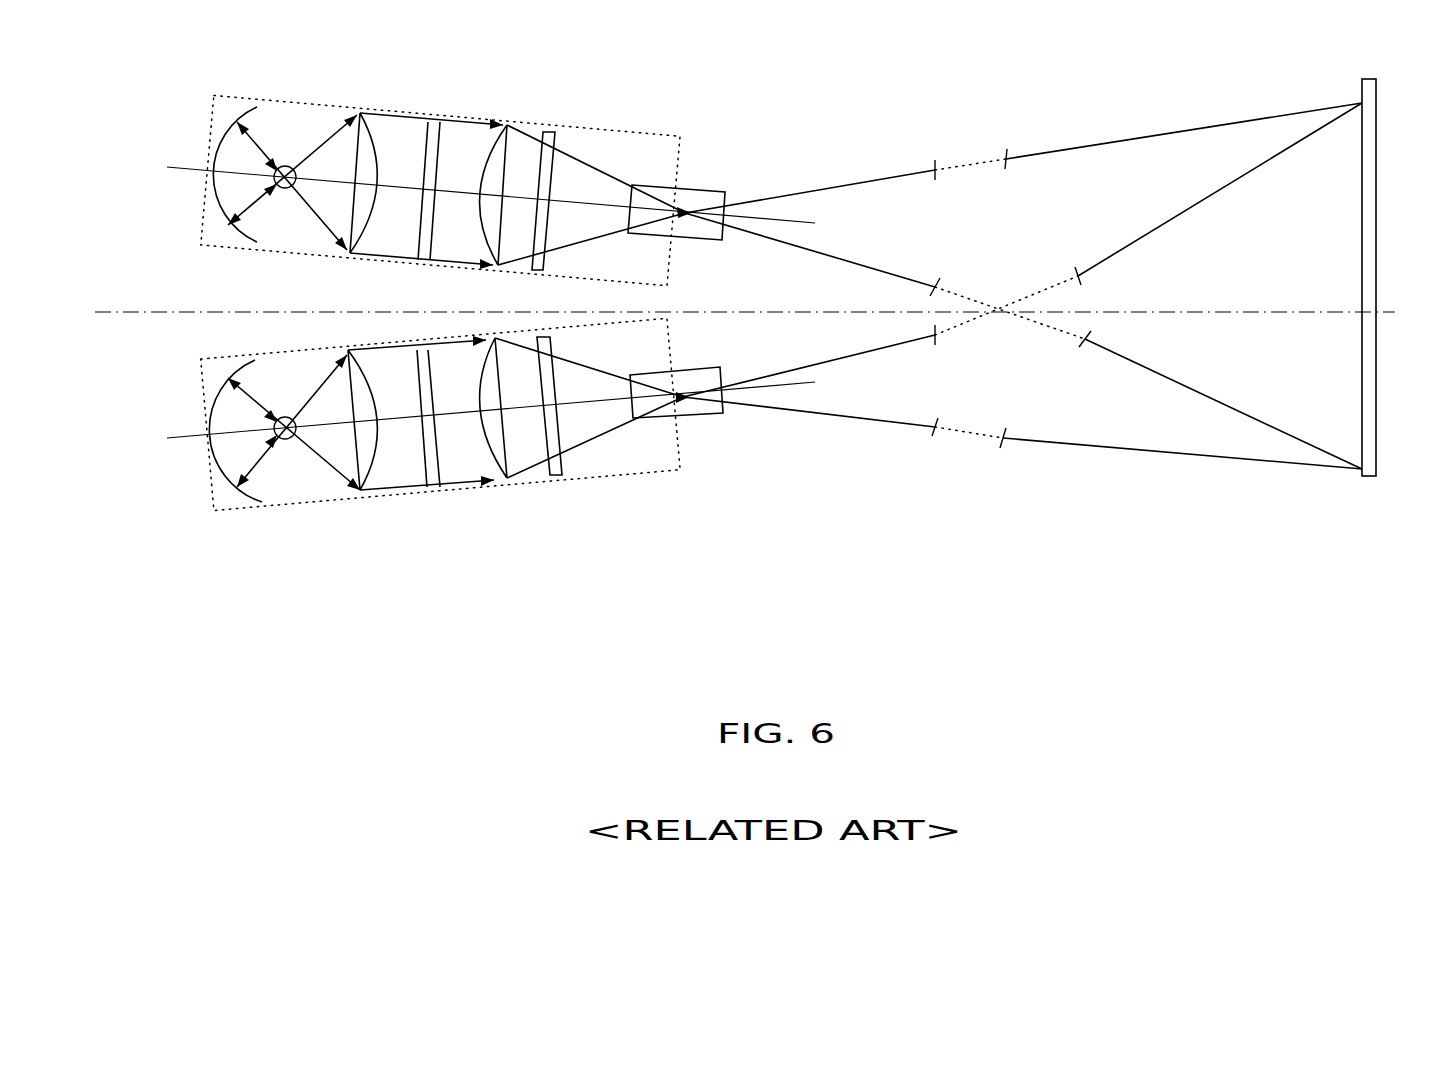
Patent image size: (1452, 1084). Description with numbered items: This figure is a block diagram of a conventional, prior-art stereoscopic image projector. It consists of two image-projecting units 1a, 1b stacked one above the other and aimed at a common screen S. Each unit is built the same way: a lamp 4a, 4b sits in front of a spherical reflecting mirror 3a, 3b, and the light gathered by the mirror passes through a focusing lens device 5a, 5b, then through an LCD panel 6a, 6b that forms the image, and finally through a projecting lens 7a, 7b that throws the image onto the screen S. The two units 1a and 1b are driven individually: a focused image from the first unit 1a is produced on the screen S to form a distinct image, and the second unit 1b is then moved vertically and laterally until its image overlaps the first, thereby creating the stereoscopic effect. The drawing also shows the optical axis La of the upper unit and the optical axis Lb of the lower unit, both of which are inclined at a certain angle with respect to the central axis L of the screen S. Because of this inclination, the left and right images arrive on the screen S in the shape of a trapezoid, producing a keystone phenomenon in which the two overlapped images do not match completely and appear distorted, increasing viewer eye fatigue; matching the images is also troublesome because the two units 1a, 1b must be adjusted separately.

The image-projecting unit 1a is at (630, 135).
The image-projecting unit 1b is at (580, 462).
The spherical reflecting mirror 3a is at (257, 105).
The spherical reflecting mirror 3b is at (227, 470).
The lamp 4a is at (288, 167).
The lamp 4b is at (288, 440).
The focusing lens device 5a is at (431, 159).
The focusing lens device 5b is at (427, 451).
The LCD panel 6a is at (555, 140).
The LCD panel 6b is at (557, 470).
The projecting lens 7a is at (693, 195).
The projecting lens 7b is at (717, 423).
The optical axis La is at (512, 204).
The optical axis Lb is at (512, 403).
The central axis L is at (755, 313).
The screen S is at (1372, 152).